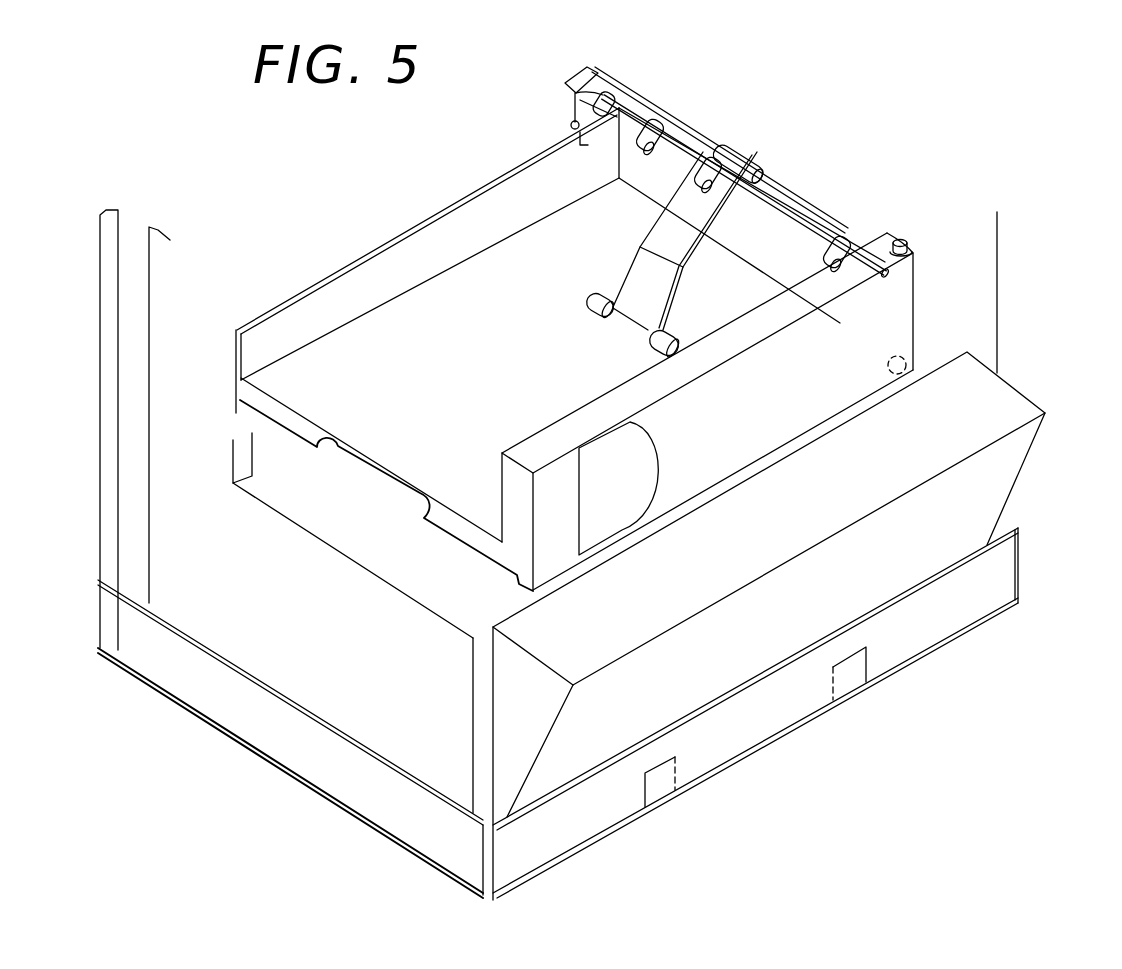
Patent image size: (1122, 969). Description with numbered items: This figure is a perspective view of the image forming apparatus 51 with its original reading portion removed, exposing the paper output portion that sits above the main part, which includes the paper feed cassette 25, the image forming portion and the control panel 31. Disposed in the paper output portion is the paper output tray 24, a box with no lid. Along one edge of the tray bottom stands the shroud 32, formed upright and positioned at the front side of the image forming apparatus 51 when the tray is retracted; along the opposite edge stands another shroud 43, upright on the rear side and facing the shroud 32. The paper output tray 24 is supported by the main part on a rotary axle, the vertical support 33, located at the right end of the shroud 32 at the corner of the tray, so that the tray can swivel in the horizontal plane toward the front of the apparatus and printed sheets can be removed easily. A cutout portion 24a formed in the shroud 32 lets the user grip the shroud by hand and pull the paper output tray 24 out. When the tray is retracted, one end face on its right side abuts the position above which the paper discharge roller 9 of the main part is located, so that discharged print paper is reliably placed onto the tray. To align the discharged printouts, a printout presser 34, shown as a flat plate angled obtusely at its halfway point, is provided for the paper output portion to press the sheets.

The paper discharge roller 9 is at (840, 243).
The paper output tray 24 is at (452, 523).
The cutout portion 24a is at (635, 455).
The paper feed cassette 25 is at (853, 673).
The control panel 31 is at (987, 397).
The shroud 32 is at (897, 313).
The vertical support 33 is at (900, 243).
The printout presser 34 is at (733, 197).
The shroud 43 is at (427, 240).
The image forming apparatus 51 is at (795, 742).